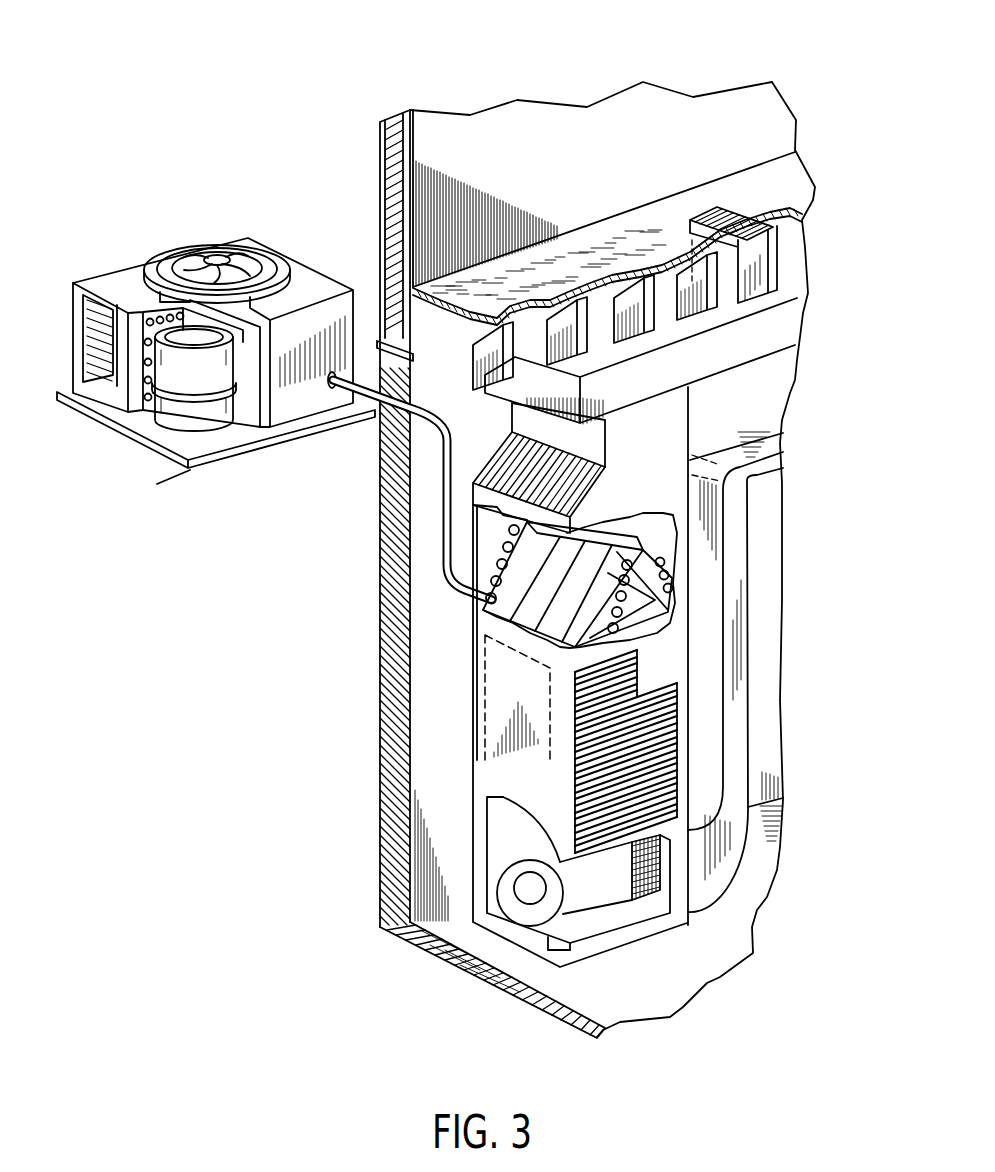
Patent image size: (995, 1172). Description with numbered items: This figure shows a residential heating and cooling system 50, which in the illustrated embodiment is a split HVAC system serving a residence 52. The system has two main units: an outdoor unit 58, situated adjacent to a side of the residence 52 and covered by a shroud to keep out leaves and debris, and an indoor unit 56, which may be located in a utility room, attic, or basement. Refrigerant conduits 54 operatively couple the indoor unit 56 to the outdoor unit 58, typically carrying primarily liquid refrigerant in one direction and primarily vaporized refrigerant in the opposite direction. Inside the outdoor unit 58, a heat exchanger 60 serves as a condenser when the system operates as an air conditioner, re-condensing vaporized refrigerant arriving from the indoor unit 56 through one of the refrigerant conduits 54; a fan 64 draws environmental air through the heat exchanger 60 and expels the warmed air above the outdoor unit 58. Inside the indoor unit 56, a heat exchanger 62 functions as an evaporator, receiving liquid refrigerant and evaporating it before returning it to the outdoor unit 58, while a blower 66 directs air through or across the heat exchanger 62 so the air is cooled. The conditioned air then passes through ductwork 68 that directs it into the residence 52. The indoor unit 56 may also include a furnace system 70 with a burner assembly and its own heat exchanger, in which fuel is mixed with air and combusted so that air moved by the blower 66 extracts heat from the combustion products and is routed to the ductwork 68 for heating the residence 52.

The residential heating and cooling system 50 is at (215, 82).
The residence 52 is at (512, 127).
The refrigerant conduits 54 is at (442, 494).
The indoor unit 56 is at (475, 720).
The outdoor unit 58 is at (216, 321).
The heat exchanger 60 is at (150, 317).
The heat exchanger 62 is at (533, 608).
The fan 64 is at (235, 250).
The blower 66 is at (523, 913).
The ductwork 68 is at (733, 347).
The furnace system 70 is at (560, 655).